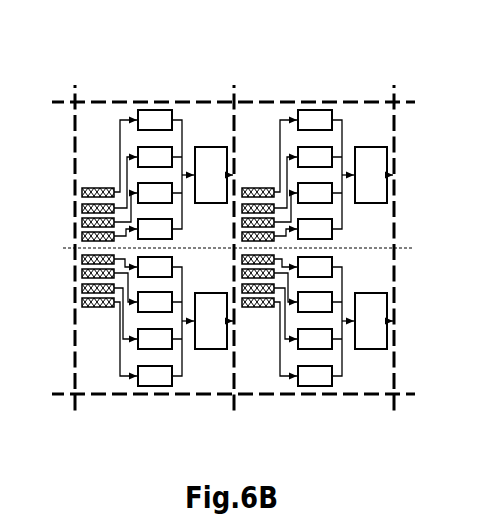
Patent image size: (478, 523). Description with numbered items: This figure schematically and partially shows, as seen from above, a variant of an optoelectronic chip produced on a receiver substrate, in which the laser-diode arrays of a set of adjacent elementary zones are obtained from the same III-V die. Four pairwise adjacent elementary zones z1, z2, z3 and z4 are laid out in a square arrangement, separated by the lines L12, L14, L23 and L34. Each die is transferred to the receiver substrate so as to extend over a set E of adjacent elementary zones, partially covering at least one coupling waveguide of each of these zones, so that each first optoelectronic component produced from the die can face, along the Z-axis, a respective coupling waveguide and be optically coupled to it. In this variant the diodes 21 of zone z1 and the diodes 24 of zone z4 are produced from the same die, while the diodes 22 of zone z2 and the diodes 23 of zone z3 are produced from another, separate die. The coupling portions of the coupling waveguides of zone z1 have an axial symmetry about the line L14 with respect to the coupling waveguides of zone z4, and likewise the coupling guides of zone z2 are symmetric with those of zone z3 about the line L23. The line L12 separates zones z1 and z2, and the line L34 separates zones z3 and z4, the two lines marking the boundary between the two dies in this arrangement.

The diodes 21 is at (74, 177).
The diodes 22 is at (258, 178).
The diodes 23 is at (258, 309).
The diodes 24 is at (99, 309).
The set of adjacent elementary zones E is at (147, 99).
The elementary zone z1 is at (134, 145).
The elementary zone z2 is at (324, 145).
The elementary zone z3 is at (324, 357).
The elementary zone z4 is at (134, 358).
The line L12 is at (233, 149).
The line L14 is at (127, 251).
The line L23 is at (344, 251).
The line L34 is at (236, 347).